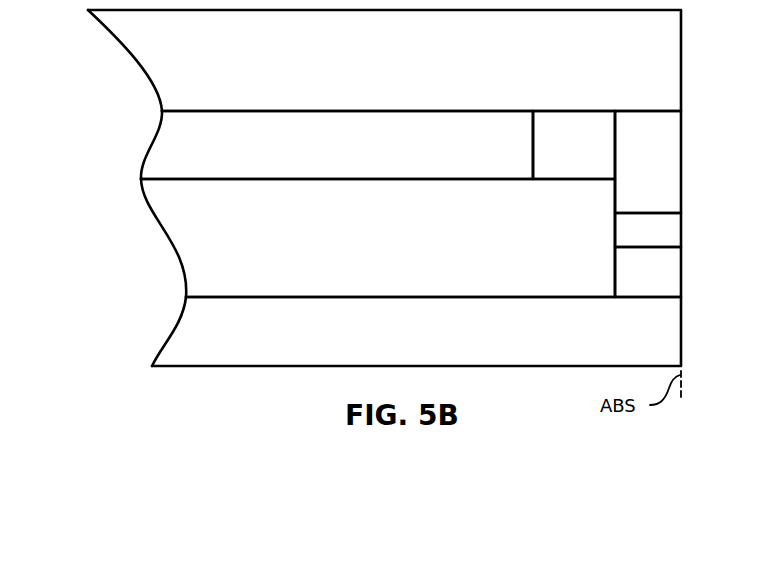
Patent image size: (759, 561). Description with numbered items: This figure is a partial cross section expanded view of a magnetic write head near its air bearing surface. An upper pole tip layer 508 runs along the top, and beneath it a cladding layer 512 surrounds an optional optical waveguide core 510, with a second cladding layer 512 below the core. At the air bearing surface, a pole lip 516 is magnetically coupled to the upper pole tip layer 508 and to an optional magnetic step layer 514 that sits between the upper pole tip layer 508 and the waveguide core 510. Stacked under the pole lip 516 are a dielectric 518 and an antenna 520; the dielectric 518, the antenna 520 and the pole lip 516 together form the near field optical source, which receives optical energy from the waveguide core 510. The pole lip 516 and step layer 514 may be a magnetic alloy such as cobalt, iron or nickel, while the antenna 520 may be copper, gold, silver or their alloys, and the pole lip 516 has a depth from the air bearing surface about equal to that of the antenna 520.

The upper pole tip layer 508 is at (437, 66).
The optical waveguide core 510 is at (402, 253).
The cladding layer 512 is at (402, 155).
The optional magnetic step layer 514 is at (594, 158).
The pole lip 516 is at (667, 173).
The dielectric 518 is at (667, 241).
The antenna 520 is at (667, 283).